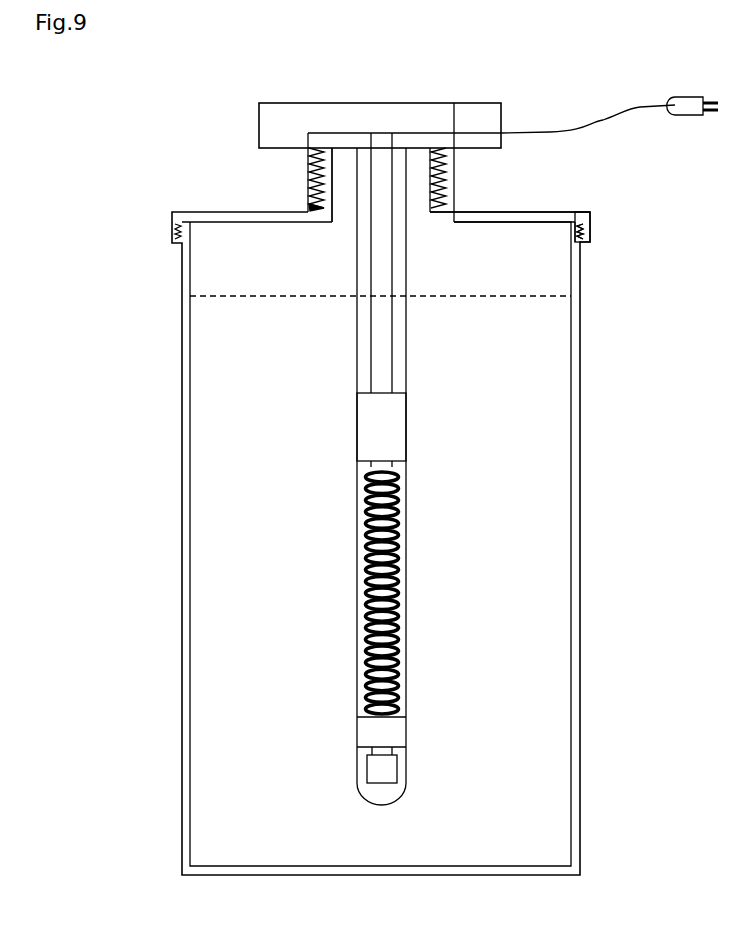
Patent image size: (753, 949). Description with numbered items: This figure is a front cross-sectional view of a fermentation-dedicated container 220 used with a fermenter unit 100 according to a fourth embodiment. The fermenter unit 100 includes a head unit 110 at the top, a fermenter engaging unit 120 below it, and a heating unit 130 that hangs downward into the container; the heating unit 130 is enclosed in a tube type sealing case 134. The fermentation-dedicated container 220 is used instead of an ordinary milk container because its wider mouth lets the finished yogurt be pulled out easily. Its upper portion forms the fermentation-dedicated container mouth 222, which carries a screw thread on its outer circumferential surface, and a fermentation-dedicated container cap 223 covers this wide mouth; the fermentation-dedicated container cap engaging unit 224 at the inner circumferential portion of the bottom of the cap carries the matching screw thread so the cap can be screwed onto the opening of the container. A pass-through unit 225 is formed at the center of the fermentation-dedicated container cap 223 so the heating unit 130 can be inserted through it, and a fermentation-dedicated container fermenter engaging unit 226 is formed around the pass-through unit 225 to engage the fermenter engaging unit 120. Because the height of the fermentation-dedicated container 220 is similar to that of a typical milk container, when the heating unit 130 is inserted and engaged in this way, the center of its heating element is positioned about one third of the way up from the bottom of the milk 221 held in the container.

The fermenter unit 100 is at (268, 128).
The head unit 110 is at (478, 113).
The fermenter engaging unit 120 is at (312, 170).
The heating unit 130 is at (368, 360).
The tube type sealing case 134 is at (358, 607).
The fermentation-dedicated container 220 is at (576, 492).
The milk 221 is at (527, 373).
The fermentation-dedicated container mouth 222 is at (575, 222).
The fermentation-dedicated container cap 223 is at (515, 212).
The fermentation-dedicated container cap engaging unit 224 is at (589, 222).
The pass-through unit 225 is at (345, 212).
The fermentation-dedicated container fermenter engaging unit 226 is at (326, 206).